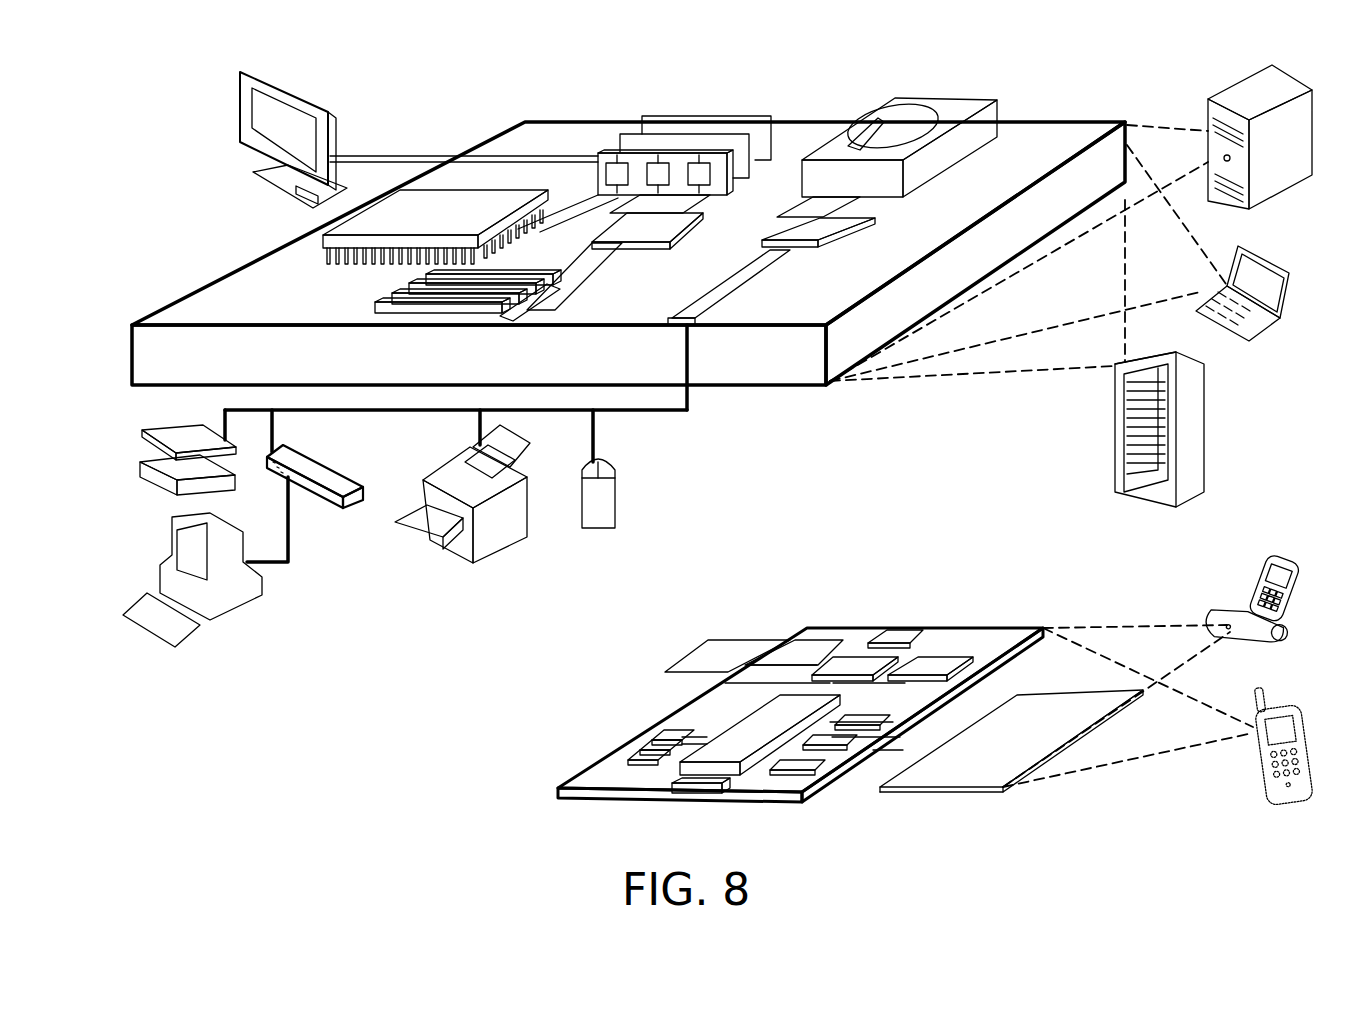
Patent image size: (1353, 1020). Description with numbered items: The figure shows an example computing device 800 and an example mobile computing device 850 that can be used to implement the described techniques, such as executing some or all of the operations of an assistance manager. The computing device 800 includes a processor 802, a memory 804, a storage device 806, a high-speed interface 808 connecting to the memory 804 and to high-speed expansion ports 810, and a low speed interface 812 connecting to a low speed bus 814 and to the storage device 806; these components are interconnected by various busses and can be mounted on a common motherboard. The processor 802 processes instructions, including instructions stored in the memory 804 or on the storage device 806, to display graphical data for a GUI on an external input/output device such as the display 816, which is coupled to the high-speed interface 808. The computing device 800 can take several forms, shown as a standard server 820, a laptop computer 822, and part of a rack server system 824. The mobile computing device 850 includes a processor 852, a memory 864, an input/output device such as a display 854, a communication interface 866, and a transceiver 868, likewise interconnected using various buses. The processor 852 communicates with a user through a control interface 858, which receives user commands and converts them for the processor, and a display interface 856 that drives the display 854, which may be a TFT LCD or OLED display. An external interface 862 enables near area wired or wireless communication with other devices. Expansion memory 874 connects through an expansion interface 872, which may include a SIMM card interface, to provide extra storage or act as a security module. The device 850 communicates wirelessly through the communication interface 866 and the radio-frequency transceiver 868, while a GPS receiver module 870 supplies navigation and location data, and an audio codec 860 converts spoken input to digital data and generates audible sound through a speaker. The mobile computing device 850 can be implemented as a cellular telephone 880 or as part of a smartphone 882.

The computing device 800 is at (456, 80).
The processor 802 is at (322, 247).
The memory 804 is at (660, 150).
The storage device 806 is at (890, 104).
The high-speed interface 808 is at (627, 222).
The high-speed expansion ports 810 is at (397, 290).
The low speed interface 812 is at (818, 227).
The low speed bus 814 is at (695, 323).
The display 816 is at (242, 76).
The standard server 820 is at (1207, 102).
The laptop computer 822 is at (1238, 250).
The rack server system 824 is at (1115, 460).
The mobile computing device 850 is at (787, 590).
The processor 852 is at (733, 772).
The display 854 is at (1010, 793).
The display interface 856 is at (813, 782).
The control interface 858 is at (845, 748).
The audio codec 860 is at (862, 724).
The external interface 862 is at (697, 780).
The memory 864 is at (650, 750).
The communication interface 866 is at (853, 663).
The transceiver 868 is at (930, 665).
The GPS receiver module 870 is at (890, 640).
The expansion interface 872 is at (772, 640).
The expansion memory 874 is at (704, 640).
The cellular telephone 880 is at (1284, 568).
The smartphone 882 is at (1264, 706).